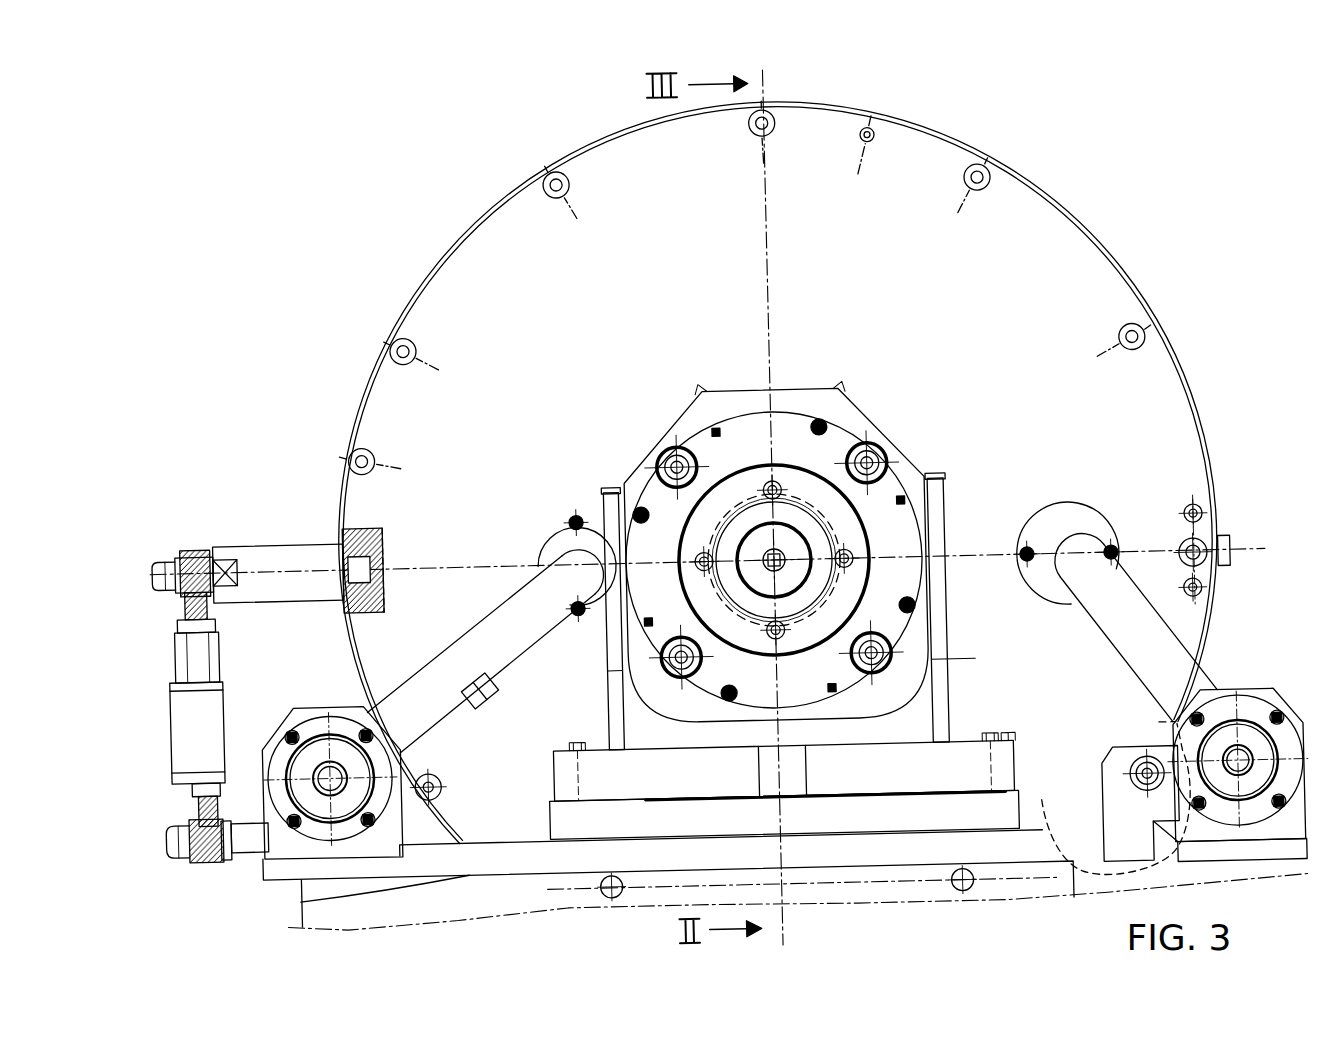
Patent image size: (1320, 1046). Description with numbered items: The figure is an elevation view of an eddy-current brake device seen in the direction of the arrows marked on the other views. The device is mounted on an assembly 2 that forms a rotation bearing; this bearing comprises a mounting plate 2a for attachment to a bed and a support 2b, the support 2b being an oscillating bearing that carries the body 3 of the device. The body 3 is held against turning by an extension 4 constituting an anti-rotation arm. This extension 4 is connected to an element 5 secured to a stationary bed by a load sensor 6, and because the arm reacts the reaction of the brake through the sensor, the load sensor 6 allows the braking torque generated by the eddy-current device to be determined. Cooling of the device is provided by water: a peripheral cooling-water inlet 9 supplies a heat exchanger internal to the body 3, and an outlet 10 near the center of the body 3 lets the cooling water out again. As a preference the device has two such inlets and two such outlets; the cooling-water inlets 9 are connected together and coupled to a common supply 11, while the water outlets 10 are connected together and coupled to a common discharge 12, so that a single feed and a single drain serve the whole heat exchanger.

The assembly forming a rotation bearing 2 is at (897, 422).
The mounting plate 2a is at (289, 884).
The support 2b is at (902, 676).
The body 3 is at (1155, 444).
The extension 4 is at (273, 548).
The element 5 is at (158, 812).
The load sensor 6 is at (189, 743).
The cooling-water inlet 9 is at (1072, 550).
The water outlet 10 is at (570, 555).
The common supply 11 is at (1237, 760).
The common discharge 12 is at (293, 707).